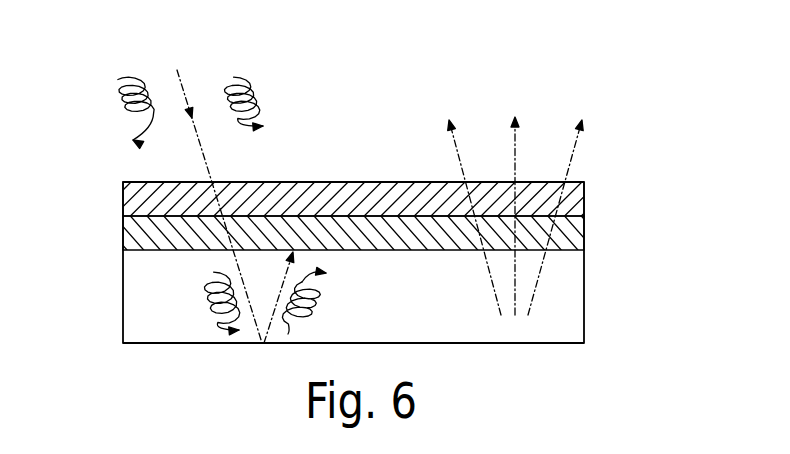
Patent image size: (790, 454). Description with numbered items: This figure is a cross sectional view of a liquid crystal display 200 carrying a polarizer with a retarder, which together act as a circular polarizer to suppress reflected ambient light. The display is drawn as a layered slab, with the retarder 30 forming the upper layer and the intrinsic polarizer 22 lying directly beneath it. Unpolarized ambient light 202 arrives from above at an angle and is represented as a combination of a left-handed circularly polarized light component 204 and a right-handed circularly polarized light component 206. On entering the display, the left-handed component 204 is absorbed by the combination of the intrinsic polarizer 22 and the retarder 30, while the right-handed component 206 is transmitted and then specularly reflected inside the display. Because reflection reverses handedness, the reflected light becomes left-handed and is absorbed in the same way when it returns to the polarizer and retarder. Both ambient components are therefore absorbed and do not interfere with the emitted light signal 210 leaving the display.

The liquid crystal display 200 is at (587, 300).
The retarder 30 is at (587, 200).
The intrinsic polarizer 22 is at (587, 237).
The unpolarized ambient light 202 is at (177, 70).
The left-handed circularly polarized light component 204 is at (118, 83).
The right-handed circularly polarized light component 206 is at (243, 77).
The emitted light signal 210 is at (512, 148).